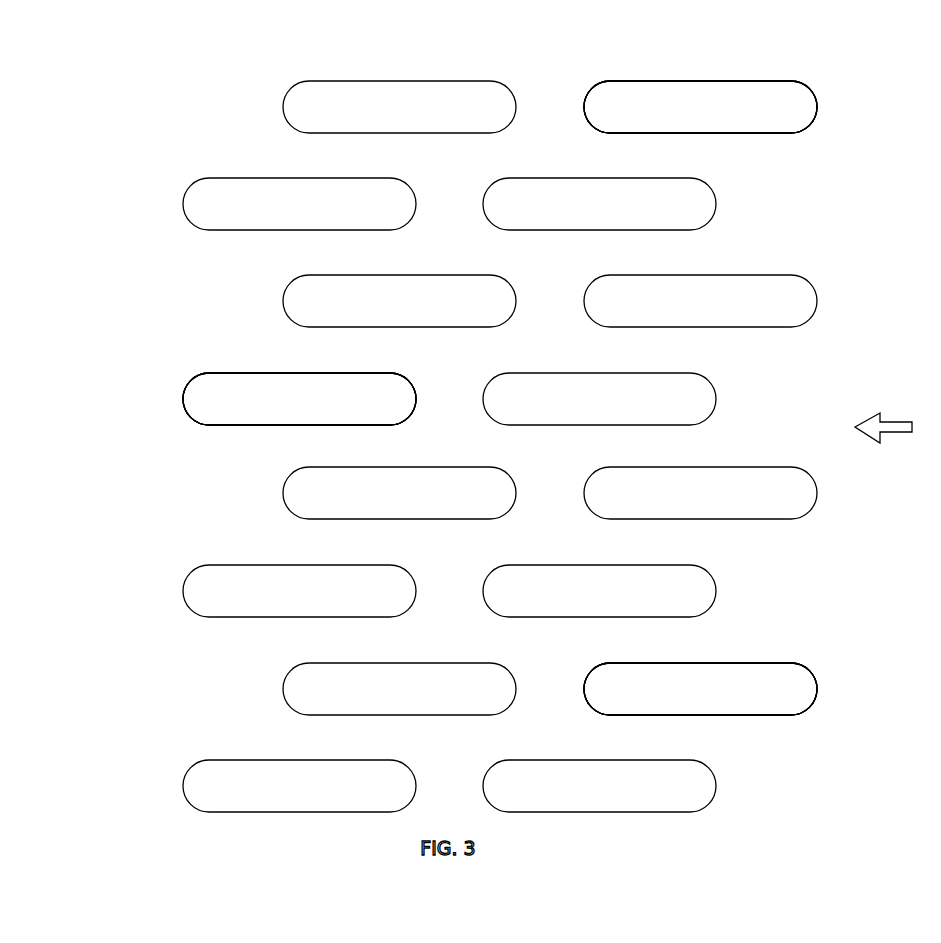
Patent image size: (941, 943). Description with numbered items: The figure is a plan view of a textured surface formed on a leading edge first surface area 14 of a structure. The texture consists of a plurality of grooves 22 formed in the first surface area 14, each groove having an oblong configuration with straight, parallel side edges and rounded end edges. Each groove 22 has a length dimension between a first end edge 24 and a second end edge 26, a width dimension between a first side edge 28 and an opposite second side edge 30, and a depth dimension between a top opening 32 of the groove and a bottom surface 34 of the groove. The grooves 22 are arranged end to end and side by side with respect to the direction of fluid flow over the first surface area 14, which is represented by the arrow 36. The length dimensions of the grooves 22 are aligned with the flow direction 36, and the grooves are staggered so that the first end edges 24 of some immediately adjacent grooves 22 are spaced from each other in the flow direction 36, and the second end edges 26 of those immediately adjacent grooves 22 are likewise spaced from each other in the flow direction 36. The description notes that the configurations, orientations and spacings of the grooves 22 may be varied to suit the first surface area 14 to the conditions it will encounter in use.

The first surface area 14 is at (493, 444).
The grooves 22 is at (647, 80).
The first end edge 24 is at (816, 98).
The second end edge 26 is at (584, 109).
The first side edge 28 is at (710, 81).
The second side edge 30 is at (708, 133).
The top opening 32 is at (748, 98).
The bottom surface 34 is at (768, 127).
The arrow 36 is at (889, 428).